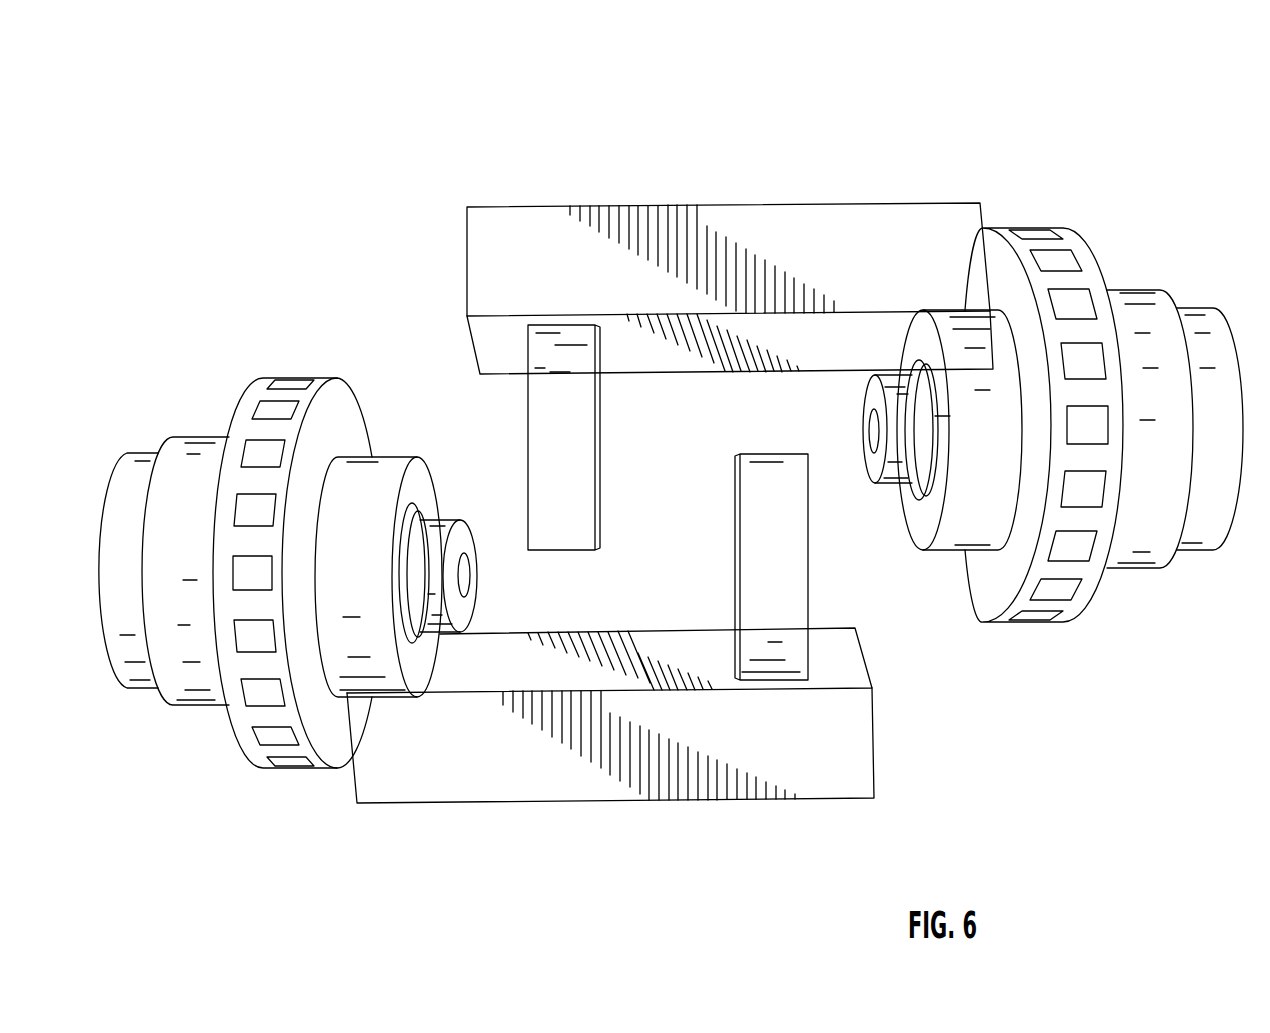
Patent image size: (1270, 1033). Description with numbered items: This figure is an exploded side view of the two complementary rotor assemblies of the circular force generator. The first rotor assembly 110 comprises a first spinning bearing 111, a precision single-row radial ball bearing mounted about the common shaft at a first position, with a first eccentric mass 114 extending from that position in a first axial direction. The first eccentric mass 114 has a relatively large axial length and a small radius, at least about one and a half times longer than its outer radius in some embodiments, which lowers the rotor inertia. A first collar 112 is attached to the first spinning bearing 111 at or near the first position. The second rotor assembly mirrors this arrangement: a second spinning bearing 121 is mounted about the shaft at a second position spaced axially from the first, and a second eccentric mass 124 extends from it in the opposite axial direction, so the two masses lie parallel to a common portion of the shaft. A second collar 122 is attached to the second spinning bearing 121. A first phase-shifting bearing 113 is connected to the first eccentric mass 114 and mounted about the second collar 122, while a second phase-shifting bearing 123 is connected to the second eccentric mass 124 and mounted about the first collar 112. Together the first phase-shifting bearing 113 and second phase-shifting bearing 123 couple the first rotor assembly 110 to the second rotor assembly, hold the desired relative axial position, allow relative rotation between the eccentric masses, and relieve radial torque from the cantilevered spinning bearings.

The first rotor assembly 110 is at (671, 86).
The first spinning bearing 111 is at (980, 430).
The first collar 112 is at (905, 433).
The first phase-shifting bearing 113 is at (555, 435).
The first eccentric mass 114 is at (826, 240).
The second spinning bearing 121 is at (353, 582).
The second collar 122 is at (465, 632).
The second phase-shifting bearing 123 is at (788, 572).
The second eccentric mass 124 is at (648, 755).